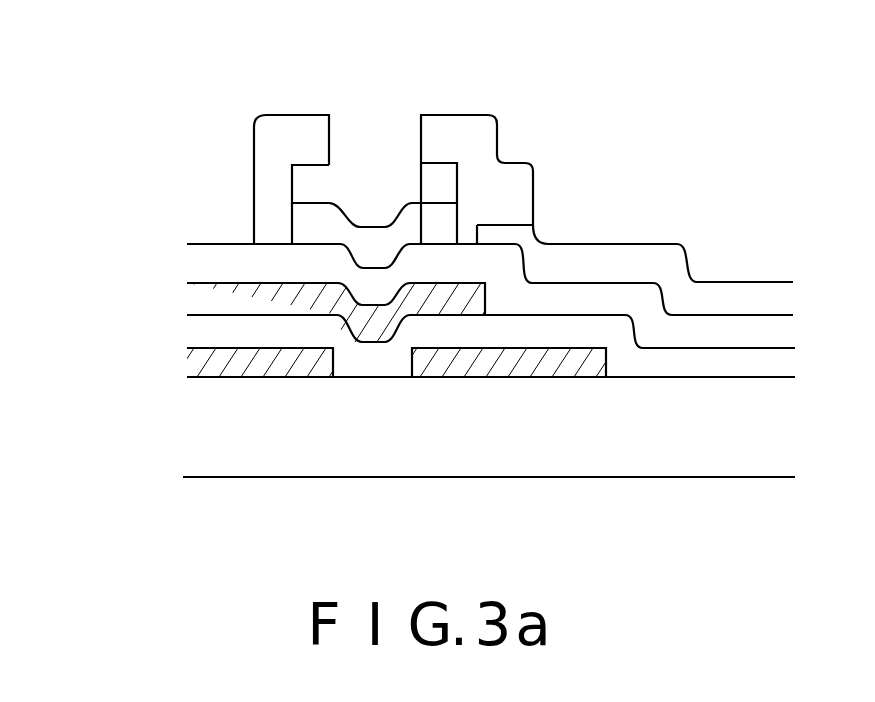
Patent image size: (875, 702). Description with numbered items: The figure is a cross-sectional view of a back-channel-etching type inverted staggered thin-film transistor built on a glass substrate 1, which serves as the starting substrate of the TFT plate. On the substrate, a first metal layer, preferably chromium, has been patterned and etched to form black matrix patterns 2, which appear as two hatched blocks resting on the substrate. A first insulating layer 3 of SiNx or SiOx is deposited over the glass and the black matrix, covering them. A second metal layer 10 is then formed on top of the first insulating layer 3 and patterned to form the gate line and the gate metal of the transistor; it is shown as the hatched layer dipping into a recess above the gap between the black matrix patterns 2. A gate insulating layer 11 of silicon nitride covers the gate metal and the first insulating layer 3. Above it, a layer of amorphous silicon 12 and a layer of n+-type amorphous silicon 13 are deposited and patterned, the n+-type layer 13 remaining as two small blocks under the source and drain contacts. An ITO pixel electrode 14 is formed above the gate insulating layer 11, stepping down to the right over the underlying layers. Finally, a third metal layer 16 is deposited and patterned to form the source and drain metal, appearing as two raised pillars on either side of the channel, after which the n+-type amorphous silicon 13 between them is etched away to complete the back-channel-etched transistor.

The glass substrate 1 is at (643, 435).
The black matrix patterns 2 is at (253, 370).
The first insulating layer 3 is at (627, 353).
The second metal layer 10 is at (242, 290).
The gate insulating layer 11 is at (283, 267).
The amorphous silicon layer 12 is at (443, 219).
The n+-type amorphous silicon layer 13 is at (303, 180).
The ITO pixel electrode 14 is at (633, 258).
The third metal layer 16 is at (310, 132).